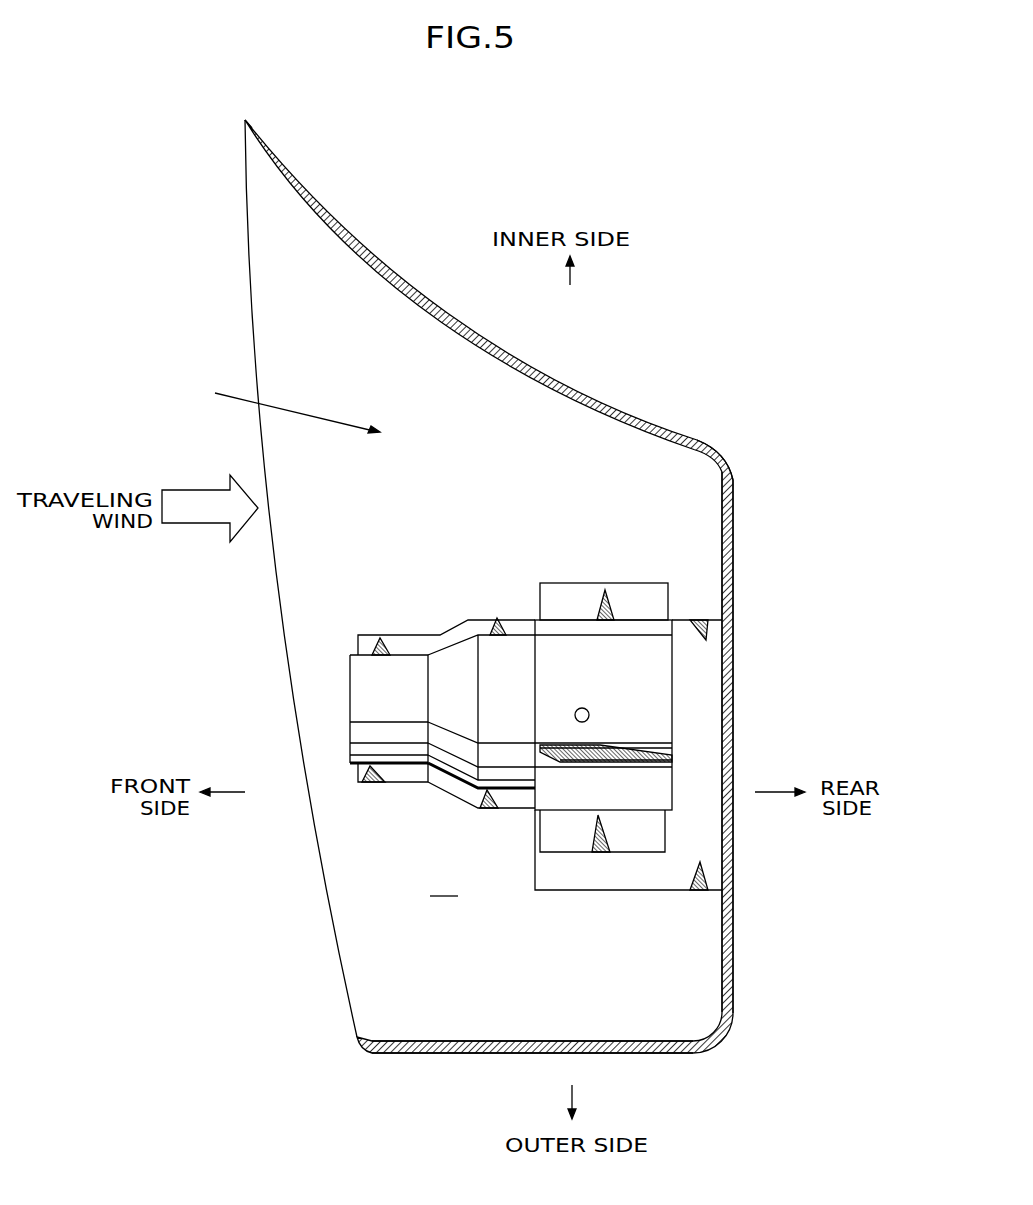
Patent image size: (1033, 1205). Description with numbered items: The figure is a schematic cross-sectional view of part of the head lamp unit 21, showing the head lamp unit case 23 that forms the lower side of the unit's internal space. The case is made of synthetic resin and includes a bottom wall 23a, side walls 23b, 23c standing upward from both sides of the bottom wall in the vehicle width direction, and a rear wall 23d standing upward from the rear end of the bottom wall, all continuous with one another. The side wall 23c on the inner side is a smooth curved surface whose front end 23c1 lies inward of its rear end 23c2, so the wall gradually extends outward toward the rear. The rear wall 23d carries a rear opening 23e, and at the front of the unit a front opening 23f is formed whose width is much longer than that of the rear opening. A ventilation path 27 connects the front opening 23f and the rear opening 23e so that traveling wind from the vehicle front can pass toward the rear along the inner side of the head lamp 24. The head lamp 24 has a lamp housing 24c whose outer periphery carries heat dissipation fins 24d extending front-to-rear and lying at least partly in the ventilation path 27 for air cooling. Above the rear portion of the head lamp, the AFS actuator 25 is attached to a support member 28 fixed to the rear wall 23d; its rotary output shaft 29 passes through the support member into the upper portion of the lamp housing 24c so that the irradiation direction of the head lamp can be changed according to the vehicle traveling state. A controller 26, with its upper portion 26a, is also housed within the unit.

The head lamp unit 21 is at (647, 371).
The head lamp unit case 23 is at (505, 598).
The bottom wall 23a is at (447, 885).
The side wall 23b is at (440, 1055).
The side wall 23c is at (503, 571).
The front end 23c1 is at (248, 120).
The rear end 23c2 is at (700, 437).
The rear wall 23d is at (733, 920).
The rear opening 23e is at (737, 512).
The front opening 23f is at (300, 634).
The head lamp 24 is at (386, 699).
The lamp housing 24c is at (413, 772).
The heat dissipation fins 24d is at (437, 635).
The AFS actuator 25 is at (651, 632).
The controller 26 is at (662, 667).
The upper portion of actuator unit 26a is at (575, 600).
The ventilation path 27 is at (285, 406).
The support member 28 is at (610, 890).
The rotary output shaft 29 is at (584, 708).